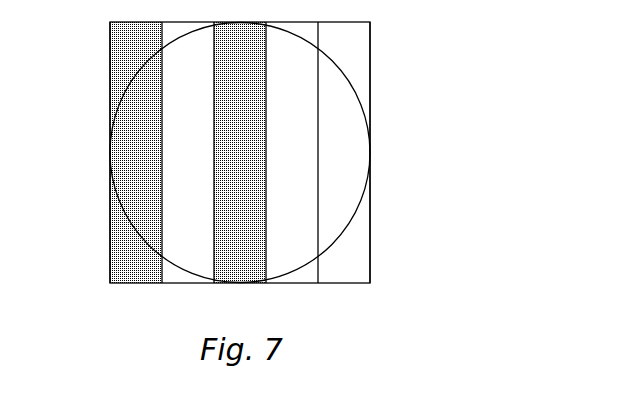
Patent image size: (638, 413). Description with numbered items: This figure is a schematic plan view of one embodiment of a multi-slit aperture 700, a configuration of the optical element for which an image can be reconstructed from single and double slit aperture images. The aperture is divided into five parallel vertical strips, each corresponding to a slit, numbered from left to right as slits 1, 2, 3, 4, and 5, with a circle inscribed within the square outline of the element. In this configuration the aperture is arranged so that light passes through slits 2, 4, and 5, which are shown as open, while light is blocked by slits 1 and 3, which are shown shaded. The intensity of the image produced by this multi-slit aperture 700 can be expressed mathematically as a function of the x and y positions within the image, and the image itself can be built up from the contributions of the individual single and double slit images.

The multi-slit aperture 700 is at (277, 152).
The slit 1 is at (129, 160).
The slit 2 is at (182, 160).
The slit 3 is at (234, 160).
The slit 4 is at (286, 160).
The slit 5 is at (338, 160).